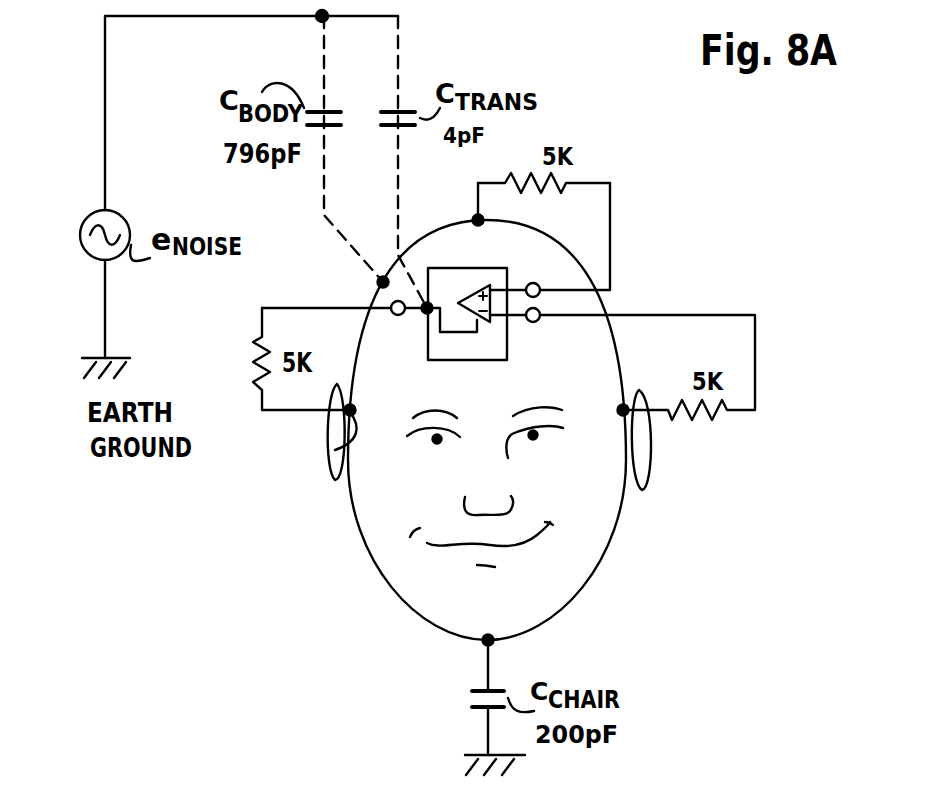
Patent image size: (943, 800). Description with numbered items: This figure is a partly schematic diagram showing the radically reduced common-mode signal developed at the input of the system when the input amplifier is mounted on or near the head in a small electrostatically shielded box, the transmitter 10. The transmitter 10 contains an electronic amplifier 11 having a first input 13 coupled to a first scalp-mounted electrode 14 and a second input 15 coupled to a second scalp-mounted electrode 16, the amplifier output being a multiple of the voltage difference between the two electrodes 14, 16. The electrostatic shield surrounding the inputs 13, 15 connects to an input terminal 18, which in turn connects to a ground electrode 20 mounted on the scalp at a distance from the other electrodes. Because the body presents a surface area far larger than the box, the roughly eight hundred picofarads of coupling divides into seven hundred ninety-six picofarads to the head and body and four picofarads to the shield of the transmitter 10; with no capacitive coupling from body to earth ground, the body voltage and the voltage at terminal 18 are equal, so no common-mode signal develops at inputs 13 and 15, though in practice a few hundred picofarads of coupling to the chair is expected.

The transmitter 10 is at (478, 286).
The electronic amplifier 11 is at (493, 268).
The first input 13 is at (540, 311).
The second input 15 is at (535, 283).
The second scalp-mounted electrode 16 is at (474, 220).
The input terminal 18 is at (391, 303).
The ground electrode 20 is at (352, 437).
The first scalp-mounted electrode 14 is at (623, 412).